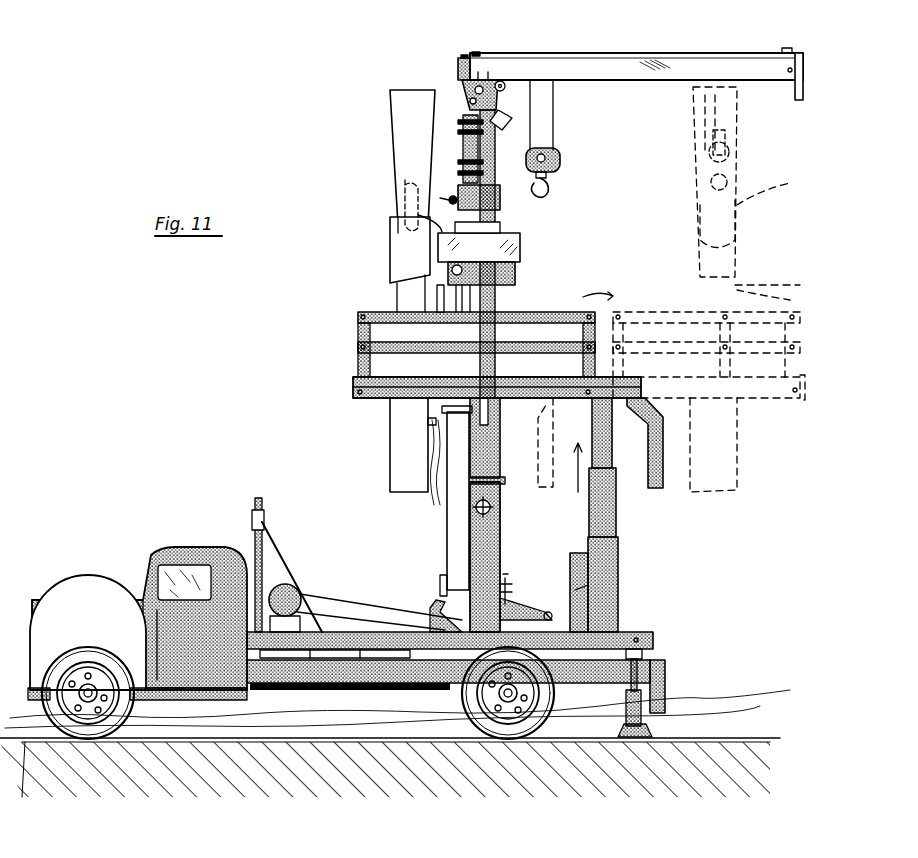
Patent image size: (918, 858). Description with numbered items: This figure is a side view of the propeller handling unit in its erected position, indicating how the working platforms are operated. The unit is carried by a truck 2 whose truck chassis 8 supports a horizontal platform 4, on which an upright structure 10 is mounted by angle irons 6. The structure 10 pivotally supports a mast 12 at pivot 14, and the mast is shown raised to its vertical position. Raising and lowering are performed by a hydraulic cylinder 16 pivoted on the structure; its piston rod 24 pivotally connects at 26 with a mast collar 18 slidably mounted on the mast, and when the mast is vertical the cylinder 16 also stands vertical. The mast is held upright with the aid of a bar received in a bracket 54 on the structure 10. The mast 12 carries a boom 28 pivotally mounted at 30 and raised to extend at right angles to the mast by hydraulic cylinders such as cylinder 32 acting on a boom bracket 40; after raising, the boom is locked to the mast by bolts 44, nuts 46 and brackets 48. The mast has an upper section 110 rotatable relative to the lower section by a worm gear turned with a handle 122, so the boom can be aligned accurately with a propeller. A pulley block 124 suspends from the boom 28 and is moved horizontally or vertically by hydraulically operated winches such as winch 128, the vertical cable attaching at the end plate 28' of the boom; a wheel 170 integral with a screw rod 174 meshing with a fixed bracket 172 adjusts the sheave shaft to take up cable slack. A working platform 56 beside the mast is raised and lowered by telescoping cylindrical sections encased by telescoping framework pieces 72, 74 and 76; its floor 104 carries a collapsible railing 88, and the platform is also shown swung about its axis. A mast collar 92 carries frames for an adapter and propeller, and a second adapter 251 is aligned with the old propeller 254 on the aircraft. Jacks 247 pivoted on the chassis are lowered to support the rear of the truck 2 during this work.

The truck 2 is at (202, 547).
The horizontal platform 4 is at (651, 640).
The angle irons 6 is at (442, 618).
The truck chassis 8 is at (450, 700).
The upright structure 10 is at (500, 546).
The mast 12 is at (496, 457).
The pivotal axis 14 is at (491, 507).
The hydraulic cylinder 16 is at (447, 538).
The mast collar 18 is at (498, 276).
The piston rod 24 is at (440, 303).
The pivotal connection 26 is at (440, 612).
The boom 28 is at (636, 53).
The end plate 28' is at (781, 82).
The pivotal axis 30 is at (504, 82).
The hydraulic cylinder 32 is at (468, 153).
The boom bracket 40 is at (491, 82).
The bolts 44 is at (474, 52).
The nuts 46 is at (462, 56).
The brackets 48 is at (458, 66).
The bracket 54 is at (510, 590).
The working platform 56 is at (356, 400).
The framework piece 72 is at (620, 622).
The framework piece 74 is at (618, 526).
The framework piece 76 is at (612, 472).
The collapsible railing 88 is at (371, 312).
The mast collar 92 is at (521, 240).
The floor 104 is at (486, 373).
The upper section of mast 110 is at (497, 142).
The handle 122 is at (448, 206).
The pulley block 124 is at (560, 166).
The winch 128 is at (290, 592).
The wheel 170 is at (606, 603).
The fixed bracket 172 is at (556, 614).
The screw rod 174 is at (600, 588).
The jacks 247 is at (658, 715).
The second adapter 251 is at (440, 228).
The old propeller 254 is at (398, 200).